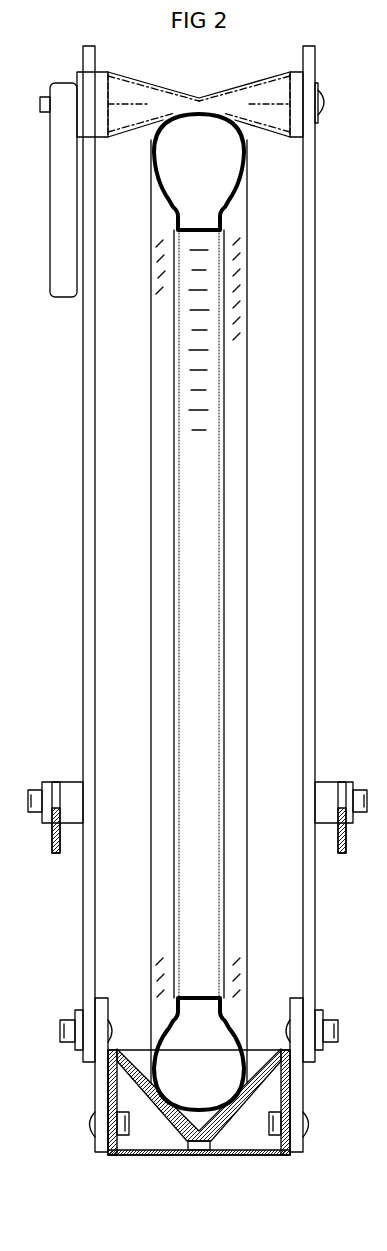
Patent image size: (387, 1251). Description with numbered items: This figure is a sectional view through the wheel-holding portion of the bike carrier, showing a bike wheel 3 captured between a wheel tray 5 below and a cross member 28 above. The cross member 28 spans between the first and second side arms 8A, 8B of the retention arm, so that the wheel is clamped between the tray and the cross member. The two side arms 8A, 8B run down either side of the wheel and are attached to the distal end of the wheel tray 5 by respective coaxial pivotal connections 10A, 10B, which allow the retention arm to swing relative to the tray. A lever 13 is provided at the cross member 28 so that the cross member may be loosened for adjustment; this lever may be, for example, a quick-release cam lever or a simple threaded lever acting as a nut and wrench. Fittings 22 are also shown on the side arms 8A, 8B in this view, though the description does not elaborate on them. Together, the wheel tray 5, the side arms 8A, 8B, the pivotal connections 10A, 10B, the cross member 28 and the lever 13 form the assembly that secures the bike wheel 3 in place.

The bike wheel 3 is at (199, 612).
The wheel tray 5 is at (180, 1122).
The first side arm 8A is at (86, 406).
The second side arm 8B is at (316, 406).
The pivotal connection 10A is at (64, 1021).
The pivotal connection 10B is at (333, 1021).
The lever 13 is at (58, 212).
The clamp 22 is at (53, 846).
The cross member 28 is at (264, 86).